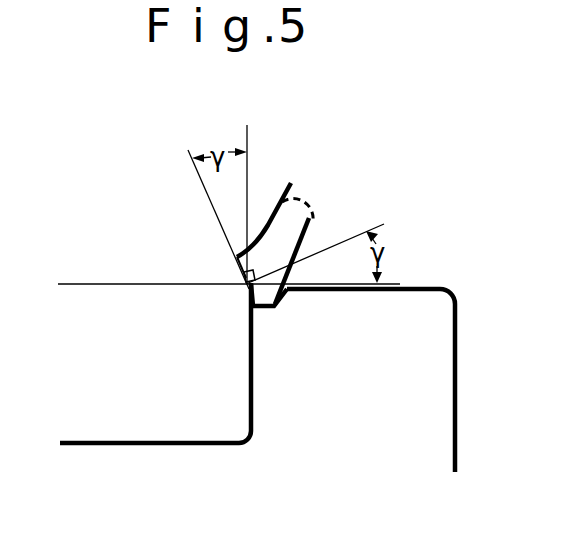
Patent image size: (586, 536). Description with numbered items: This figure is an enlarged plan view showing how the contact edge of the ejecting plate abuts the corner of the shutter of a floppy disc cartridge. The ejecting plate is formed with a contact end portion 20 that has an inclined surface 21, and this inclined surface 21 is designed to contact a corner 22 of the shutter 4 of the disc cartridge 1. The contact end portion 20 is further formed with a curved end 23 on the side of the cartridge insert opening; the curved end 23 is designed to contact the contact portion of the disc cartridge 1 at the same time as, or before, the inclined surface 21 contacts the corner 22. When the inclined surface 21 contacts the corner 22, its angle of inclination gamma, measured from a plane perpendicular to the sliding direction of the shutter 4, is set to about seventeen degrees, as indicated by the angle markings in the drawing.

The disc cartridge 1 is at (430, 398).
The shutter 4 is at (98, 303).
The contact end portion 20 is at (287, 230).
The inclined surface 21 is at (240, 262).
The corner 22 is at (246, 280).
The curved end 23 is at (262, 306).